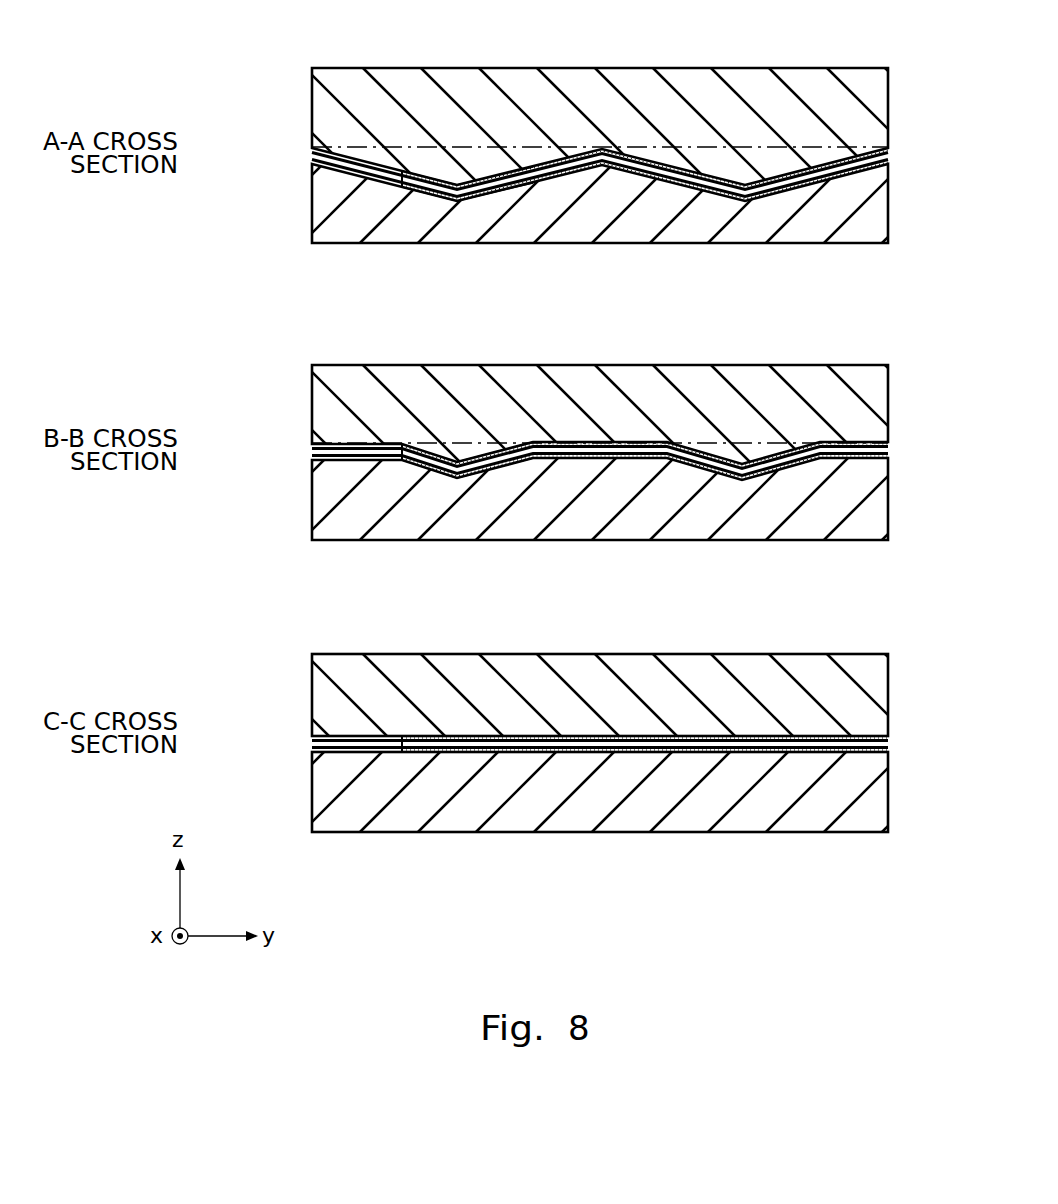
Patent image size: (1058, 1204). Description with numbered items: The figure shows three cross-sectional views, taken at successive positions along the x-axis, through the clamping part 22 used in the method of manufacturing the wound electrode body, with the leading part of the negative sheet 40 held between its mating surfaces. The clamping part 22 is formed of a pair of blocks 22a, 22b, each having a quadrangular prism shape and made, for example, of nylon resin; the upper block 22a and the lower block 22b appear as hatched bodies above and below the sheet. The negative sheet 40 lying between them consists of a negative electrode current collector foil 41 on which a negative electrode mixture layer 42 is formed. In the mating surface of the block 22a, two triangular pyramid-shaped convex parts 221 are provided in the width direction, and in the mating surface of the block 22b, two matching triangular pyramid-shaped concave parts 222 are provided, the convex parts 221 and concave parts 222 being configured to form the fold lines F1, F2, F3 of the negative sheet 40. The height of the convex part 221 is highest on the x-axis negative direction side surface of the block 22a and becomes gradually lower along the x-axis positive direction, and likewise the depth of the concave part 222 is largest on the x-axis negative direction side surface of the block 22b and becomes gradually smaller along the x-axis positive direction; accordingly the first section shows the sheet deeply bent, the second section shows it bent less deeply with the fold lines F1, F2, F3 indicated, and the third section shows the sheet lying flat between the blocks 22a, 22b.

The clamping part 22 is at (626, 441).
The block 22a is at (322, 108).
The block 22b is at (317, 182).
The convex part 221 is at (414, 153).
The concave part 222 is at (411, 204).
The negative sheet 40 is at (616, 469).
The negative electrode current collector foil 41 is at (343, 166).
The negative electrode mixture layer 42 is at (888, 160).
The fold line F1 is at (743, 202).
The fold line F2 is at (812, 465).
The fold line F3 is at (673, 461).